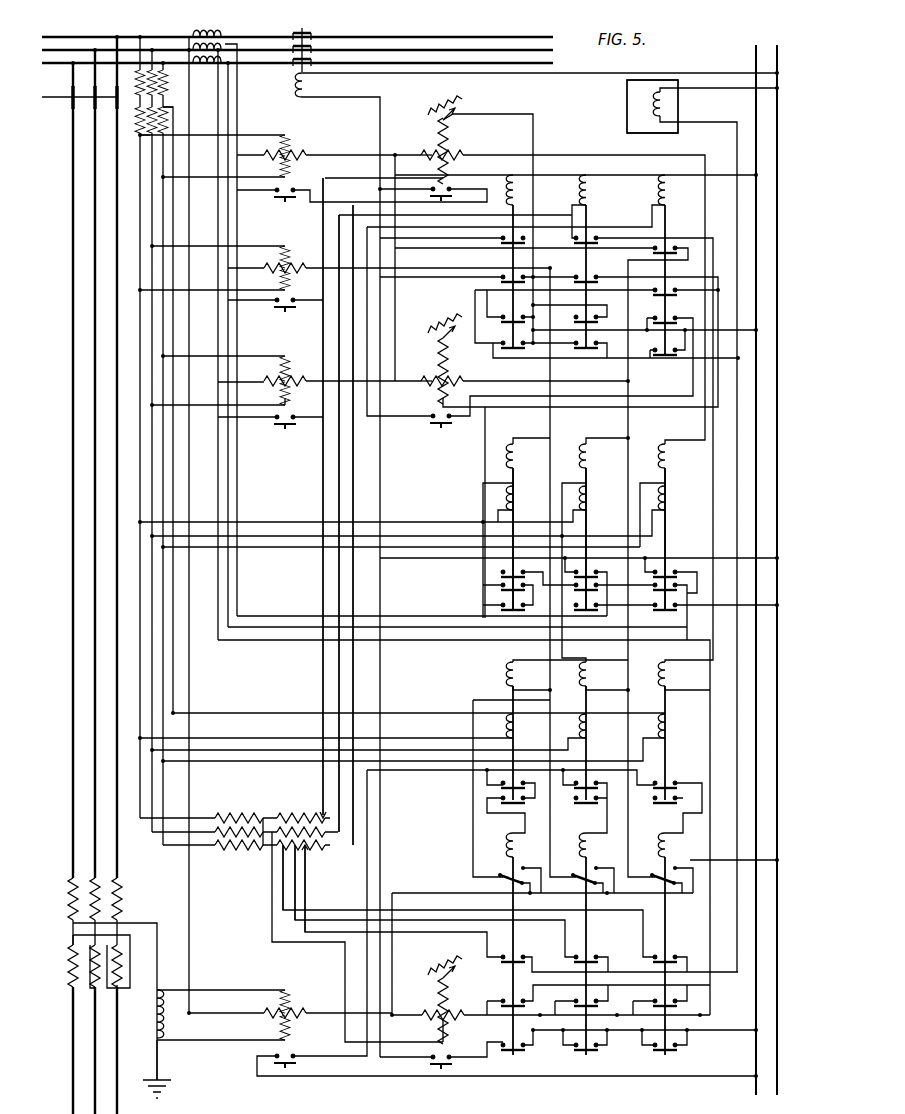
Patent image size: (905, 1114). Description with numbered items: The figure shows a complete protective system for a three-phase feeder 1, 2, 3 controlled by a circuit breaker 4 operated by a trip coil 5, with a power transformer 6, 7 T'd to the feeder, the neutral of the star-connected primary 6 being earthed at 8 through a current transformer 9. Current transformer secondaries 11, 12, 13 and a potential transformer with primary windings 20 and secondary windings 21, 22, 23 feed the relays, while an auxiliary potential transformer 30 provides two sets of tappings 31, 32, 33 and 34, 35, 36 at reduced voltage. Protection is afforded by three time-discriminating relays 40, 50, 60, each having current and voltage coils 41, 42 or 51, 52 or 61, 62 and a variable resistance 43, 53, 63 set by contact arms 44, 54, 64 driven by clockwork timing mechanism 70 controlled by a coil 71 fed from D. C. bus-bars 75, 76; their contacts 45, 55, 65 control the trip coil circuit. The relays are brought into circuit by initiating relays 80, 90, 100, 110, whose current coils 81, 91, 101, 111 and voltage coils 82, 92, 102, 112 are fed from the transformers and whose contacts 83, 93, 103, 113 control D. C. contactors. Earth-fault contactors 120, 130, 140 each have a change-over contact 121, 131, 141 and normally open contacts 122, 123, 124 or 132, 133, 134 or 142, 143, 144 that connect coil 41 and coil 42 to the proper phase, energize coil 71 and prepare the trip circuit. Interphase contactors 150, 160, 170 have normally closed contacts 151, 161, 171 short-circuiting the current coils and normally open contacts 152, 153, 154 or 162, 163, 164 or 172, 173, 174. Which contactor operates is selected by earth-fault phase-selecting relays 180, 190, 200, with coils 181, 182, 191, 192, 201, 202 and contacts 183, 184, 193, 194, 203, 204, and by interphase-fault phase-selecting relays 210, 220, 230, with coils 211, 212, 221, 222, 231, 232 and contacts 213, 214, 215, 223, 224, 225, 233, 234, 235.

The protected feeder phase 1 is at (392, 37).
The protected feeder phase 2 is at (413, 50).
The protected feeder phase 3 is at (435, 63).
The circuit breaker 4 is at (302, 41).
The trip coil 5 is at (294, 86).
The star-connected primary of power transformer 6 is at (121, 900).
The power transformer secondary 7 is at (68, 964).
The neutral earth connection 8 is at (155, 1058).
The current transformer on neutral earth connection 9 is at (152, 1015).
The current transformer secondary 11 is at (203, 36).
The current transformer secondary 12 is at (222, 46).
The current transformer secondary 13 is at (210, 65).
The star-connected primary windings of potential transformer 20 is at (166, 82).
The potential transformer secondary winding 21 is at (140, 136).
The potential transformer secondary winding 22 is at (160, 112).
The potential transformer secondary winding 23 is at (170, 128).
The auxiliary potential transformer 30 is at (264, 815).
The tapping 31 is at (322, 774).
The tapping 32 is at (336, 788).
The tapping 33 is at (350, 802).
The reduced voltage tapping 34 is at (281, 867).
The reduced voltage tapping 35 is at (303, 851).
The reduced voltage tapping 36 is at (306, 888).
The earth fault time-discriminating relay 40 is at (426, 989).
The current coil 41 is at (425, 1011).
The voltage coil 42 is at (445, 1027).
The variable resistance 43 is at (430, 960).
The contact arm 44 is at (446, 978).
The contacts of time-discriminating relay 45 is at (442, 1068).
The time-discriminating relay 50 is at (428, 136).
The current coil 51 is at (423, 154).
The voltage coil 52 is at (455, 146).
The variable resistance 53 is at (447, 103).
The contact arm 54 is at (450, 118).
The contacts of time-discriminating relay 55 is at (445, 188).
The time-discriminating relay 60 is at (428, 361).
The current coil 61 is at (426, 381).
The voltage coil 62 is at (436, 388).
The variable resistance 63 is at (434, 327).
The contact arm 64 is at (446, 345).
The contacts of time-discriminating relay 65 is at (442, 427).
The timing mechanism 70 is at (627, 99).
The control coil 71 is at (674, 106).
The D. C. control bus-bar 75 is at (756, 46).
The D. C. control bus-bar 76 is at (777, 46).
The earth fault initiating relay 80 is at (289, 1003).
The current coil 81 is at (292, 1026).
The voltage coil 82 is at (282, 990).
The contacts of initiating relay 83 is at (286, 1068).
The initiating relay 90 is at (288, 147).
The current coil 91 is at (285, 170).
The voltage coil 92 is at (282, 138).
The contacts of initiating relay 93 is at (281, 198).
The initiating relay 100 is at (293, 260).
The current coil 101 is at (287, 282).
The voltage coil 102 is at (282, 252).
The contacts of initiating relay 103 is at (284, 310).
The initiating relay 110 is at (292, 374).
The current coil 111 is at (287, 396).
The voltage coil 112 is at (280, 362).
The contacts of initiating relay 113 is at (283, 426).
The D. C. contactor 120 is at (516, 852).
The change-over contact 121 is at (498, 878).
The normally open contact 122 is at (504, 962).
The normally open contact 123 is at (508, 1002).
The normally open contact 124 is at (512, 1056).
The D. C. contactor 130 is at (590, 852).
The change-over contact 131 is at (576, 878).
The normally open contact 132 is at (578, 962).
The normally open contact 133 is at (582, 1002).
The normally open contact 134 is at (588, 1056).
The D. C. contactor 140 is at (672, 852).
The change-over contact 141 is at (656, 878).
The normally open contact 142 is at (656, 962).
The normally open contact 143 is at (660, 1002).
The normally open contact 144 is at (668, 1056).
The auxiliary D. C. contactor 150 is at (500, 186).
The normally closed contact 151 is at (517, 237).
The normally open contact 152 is at (516, 281).
The normally open contact 153 is at (505, 324).
The normally open contact 154 is at (511, 352).
The auxiliary D. C. contactor 160 is at (591, 188).
The normally closed contact 161 is at (592, 236).
The normally open contact 162 is at (588, 279).
The normally open contact 163 is at (590, 318).
The normally open contact 164 is at (588, 352).
The auxiliary D. C. contactor 170 is at (667, 188).
The normally closed contact 171 is at (670, 246).
The normally open contact 172 is at (670, 288).
The normally open contact 173 is at (668, 316).
The normally open contact 174 is at (666, 354).
The earth-fault phase-selecting relay 180 is at (493, 593).
The voltage coil 181 is at (517, 736).
The current coil 182 is at (516, 679).
The contact 183 is at (500, 784).
The contact 184 is at (500, 798).
The earth-fault phase-selecting relay 190 is at (568, 593).
The voltage coil 191 is at (591, 736).
The current coil 192 is at (591, 679).
The contact 193 is at (590, 781).
The contact 194 is at (587, 804).
The earth-fault phase-selecting relay 200 is at (650, 593).
The voltage coil 201 is at (671, 728).
The current coil 202 is at (672, 679).
The contact 203 is at (670, 782).
The contact 204 is at (664, 804).
The interphase-fault phase-selecting relay 210 is at (533, 483).
The voltage coil 211 is at (516, 504).
The current coil 212 is at (518, 461).
The contact 213 is at (484, 566).
The contact 214 is at (482, 582).
The contact 215 is at (482, 601).
The interphase-fault phase-selecting relay 220 is at (606, 483).
The voltage coil 221 is at (590, 504).
The current coil 222 is at (592, 461).
The contact 223 is at (590, 568).
The contact 224 is at (582, 596).
The contact 225 is at (591, 610).
The interphase-fault phase-selecting relay 230 is at (685, 483).
The voltage coil 231 is at (669, 504).
The current coil 232 is at (671, 461).
The contact 233 is at (670, 570).
The contact 234 is at (660, 594).
The contact 235 is at (668, 612).